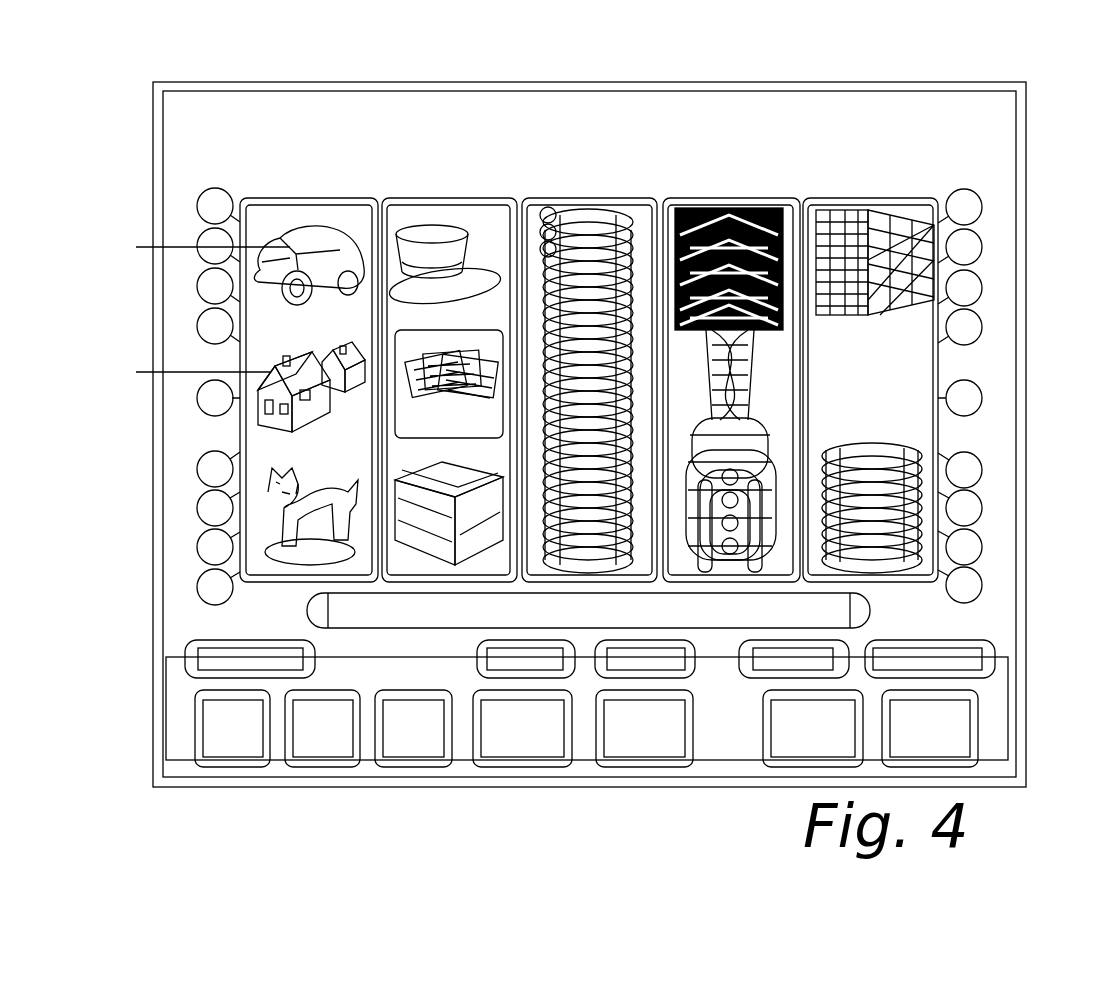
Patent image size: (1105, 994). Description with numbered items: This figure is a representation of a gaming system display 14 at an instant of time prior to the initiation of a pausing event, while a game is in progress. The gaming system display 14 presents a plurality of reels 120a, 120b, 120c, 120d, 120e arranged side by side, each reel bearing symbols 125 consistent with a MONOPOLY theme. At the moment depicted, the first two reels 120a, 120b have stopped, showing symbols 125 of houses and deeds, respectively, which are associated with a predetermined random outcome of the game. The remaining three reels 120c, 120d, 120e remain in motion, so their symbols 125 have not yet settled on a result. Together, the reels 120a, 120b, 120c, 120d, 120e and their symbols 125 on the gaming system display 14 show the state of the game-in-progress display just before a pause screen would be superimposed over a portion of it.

The gaming system display 14 is at (1019, 207).
The reel 120a is at (296, 192).
The reel 120b is at (434, 192).
The reel 120c is at (576, 192).
The reel 120d is at (718, 192).
The reel 120e is at (862, 192).
The symbols 125 is at (136, 372).